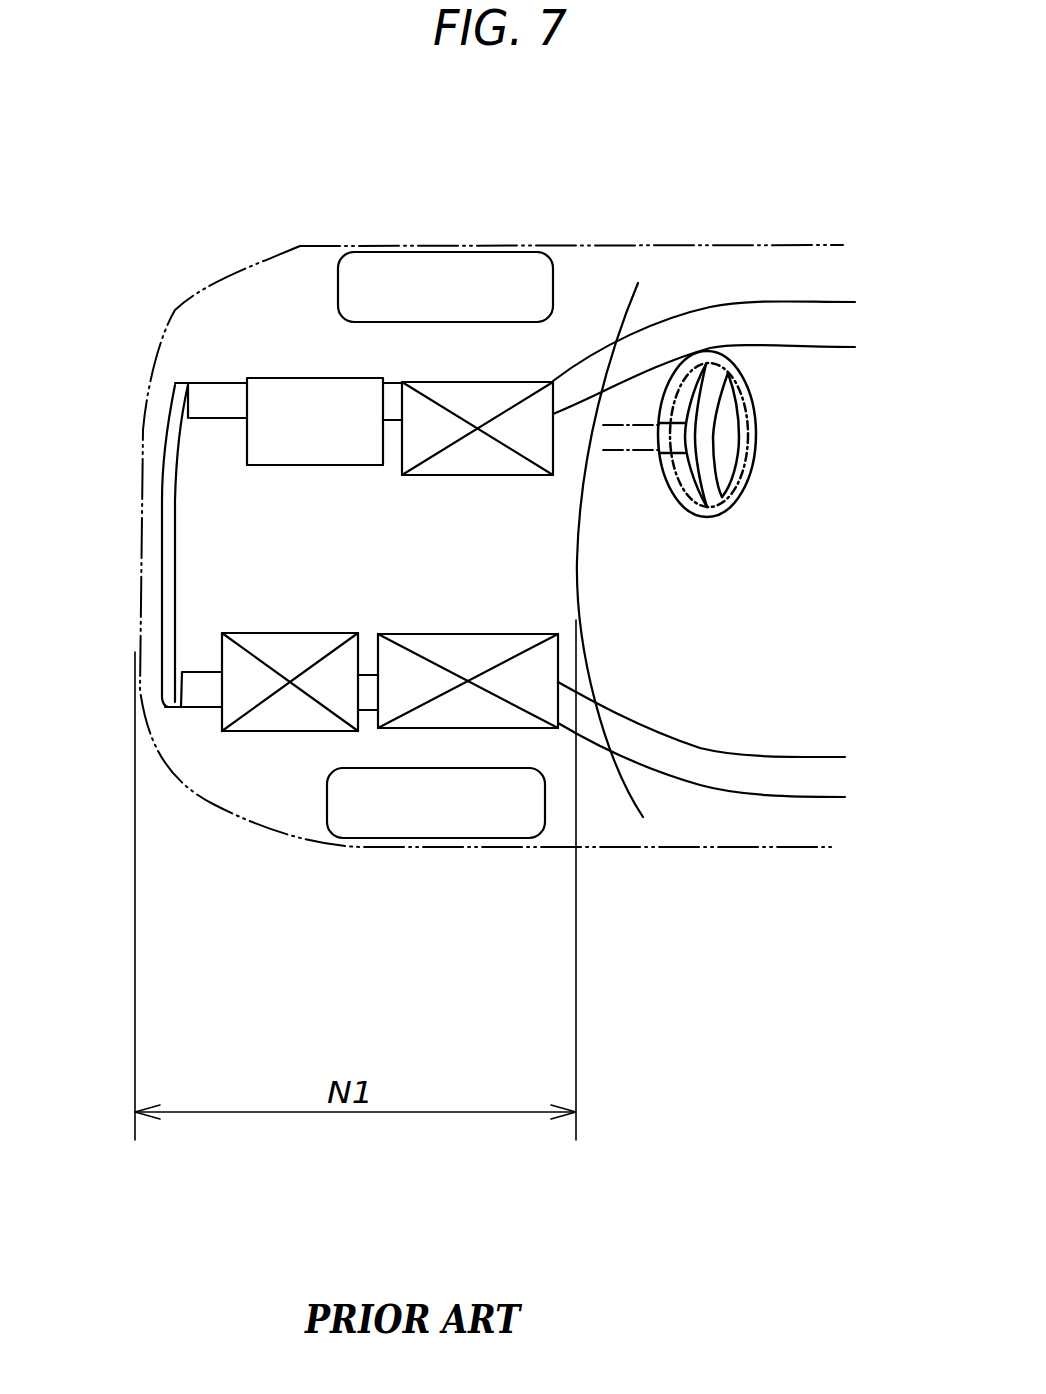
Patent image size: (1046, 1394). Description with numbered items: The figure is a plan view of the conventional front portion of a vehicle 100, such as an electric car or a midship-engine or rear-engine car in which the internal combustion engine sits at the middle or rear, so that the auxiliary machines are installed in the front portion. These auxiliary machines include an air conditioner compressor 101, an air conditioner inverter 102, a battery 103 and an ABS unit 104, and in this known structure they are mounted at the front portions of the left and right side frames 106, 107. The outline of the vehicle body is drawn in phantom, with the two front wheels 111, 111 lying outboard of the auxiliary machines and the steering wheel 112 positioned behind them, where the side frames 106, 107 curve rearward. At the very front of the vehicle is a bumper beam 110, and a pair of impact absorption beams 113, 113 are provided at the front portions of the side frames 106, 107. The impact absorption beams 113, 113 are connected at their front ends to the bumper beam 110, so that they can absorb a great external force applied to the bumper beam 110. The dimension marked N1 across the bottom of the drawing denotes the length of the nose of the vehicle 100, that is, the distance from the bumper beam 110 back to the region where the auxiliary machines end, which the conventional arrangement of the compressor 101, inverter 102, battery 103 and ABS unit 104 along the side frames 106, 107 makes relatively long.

The vehicle 100 is at (690, 245).
The air conditioner compressor 101 is at (440, 733).
The air conditioner inverter 102 is at (298, 735).
The battery 103 is at (312, 390).
The ABS unit 104 is at (468, 390).
The left side frame 106 is at (797, 797).
The right side frame 107 is at (813, 302).
The bumper beam 110 is at (163, 477).
The front wheels 111 is at (527, 262).
The steering wheel 112 is at (755, 423).
The impact absorption beam 113 is at (226, 385).